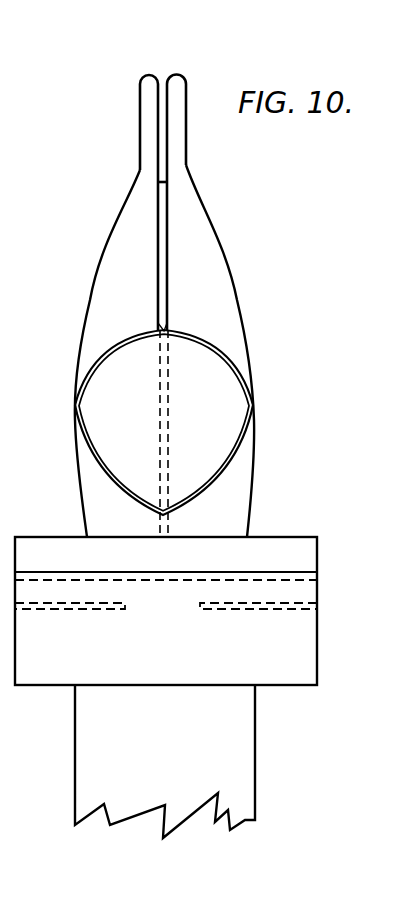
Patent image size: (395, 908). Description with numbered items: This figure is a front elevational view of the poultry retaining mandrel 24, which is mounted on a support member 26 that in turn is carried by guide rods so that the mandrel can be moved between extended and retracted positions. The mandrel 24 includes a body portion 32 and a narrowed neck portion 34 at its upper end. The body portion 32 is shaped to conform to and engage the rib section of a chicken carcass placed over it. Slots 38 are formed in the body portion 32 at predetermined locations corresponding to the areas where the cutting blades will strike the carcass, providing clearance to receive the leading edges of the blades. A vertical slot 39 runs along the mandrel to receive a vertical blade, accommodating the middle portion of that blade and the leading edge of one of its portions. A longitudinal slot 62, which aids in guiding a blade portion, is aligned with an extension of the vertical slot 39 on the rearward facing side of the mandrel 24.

The poultry retaining mandrel 24 is at (90, 293).
The support member 26 is at (225, 723).
The body portion 32 is at (240, 292).
The narrowed neck portion 34 is at (176, 107).
The slots 38 is at (204, 500).
The vertical slot 39 is at (170, 226).
The longitudinal slot 62 is at (163, 131).